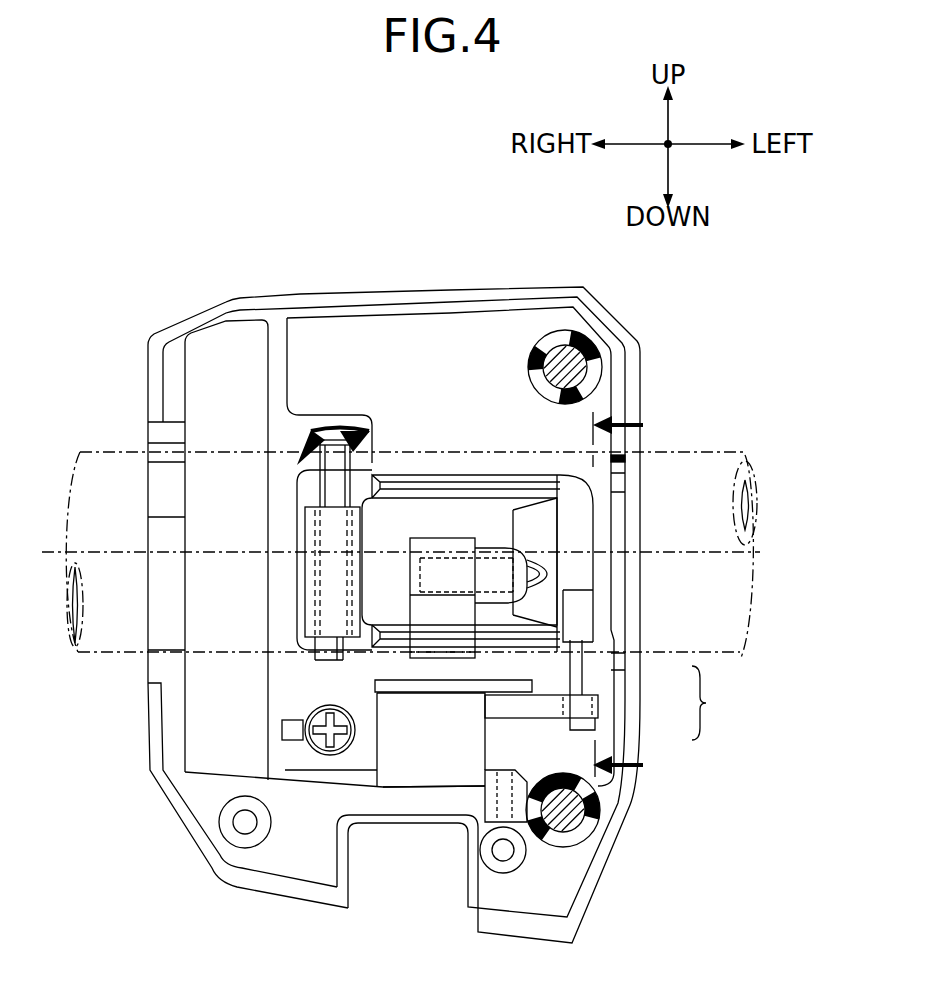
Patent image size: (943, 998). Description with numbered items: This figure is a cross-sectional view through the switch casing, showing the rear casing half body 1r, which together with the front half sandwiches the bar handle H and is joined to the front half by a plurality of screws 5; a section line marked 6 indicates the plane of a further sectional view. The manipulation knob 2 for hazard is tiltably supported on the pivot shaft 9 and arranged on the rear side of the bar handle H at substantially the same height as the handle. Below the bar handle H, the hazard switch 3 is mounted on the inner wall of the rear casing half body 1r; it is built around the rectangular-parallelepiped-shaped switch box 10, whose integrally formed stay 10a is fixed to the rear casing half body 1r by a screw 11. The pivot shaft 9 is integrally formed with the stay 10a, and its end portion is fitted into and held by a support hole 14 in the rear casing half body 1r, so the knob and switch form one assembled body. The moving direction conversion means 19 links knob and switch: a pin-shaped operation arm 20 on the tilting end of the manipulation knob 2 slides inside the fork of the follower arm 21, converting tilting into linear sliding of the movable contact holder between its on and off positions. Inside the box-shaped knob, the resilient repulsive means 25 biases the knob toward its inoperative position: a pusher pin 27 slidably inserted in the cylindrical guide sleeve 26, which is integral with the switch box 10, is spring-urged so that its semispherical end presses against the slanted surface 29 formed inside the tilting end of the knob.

The rear casing half body 1r is at (483, 292).
The screws 5 is at (570, 362).
The section line 6 is at (635, 595).
The bar handle H is at (697, 457).
The support hole 14 is at (337, 430).
The pivot shaft 9 is at (327, 490).
The manipulation knob 2 is at (433, 512).
The slanted surface 29 is at (547, 528).
The resilient repulsive means 25 is at (498, 538).
The guide sleeve 26 is at (513, 578).
The pusher pin 27 is at (547, 600).
The operation arm 20 is at (590, 672).
The follower arm 21 is at (600, 708).
The moving direction conversion means 19 is at (714, 703).
The screw 11 is at (315, 713).
The switch box 10 is at (407, 757).
The stay 10a is at (303, 760).
The hazard switch 3 is at (437, 795).